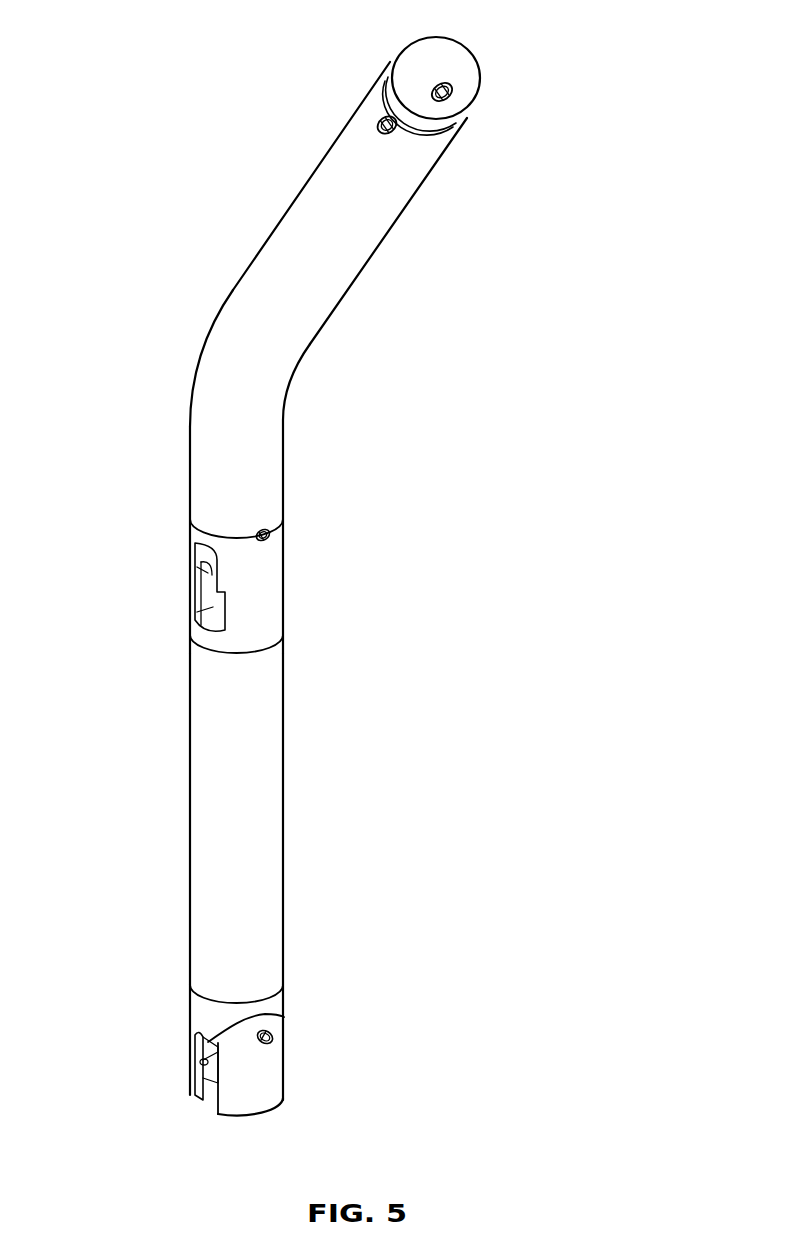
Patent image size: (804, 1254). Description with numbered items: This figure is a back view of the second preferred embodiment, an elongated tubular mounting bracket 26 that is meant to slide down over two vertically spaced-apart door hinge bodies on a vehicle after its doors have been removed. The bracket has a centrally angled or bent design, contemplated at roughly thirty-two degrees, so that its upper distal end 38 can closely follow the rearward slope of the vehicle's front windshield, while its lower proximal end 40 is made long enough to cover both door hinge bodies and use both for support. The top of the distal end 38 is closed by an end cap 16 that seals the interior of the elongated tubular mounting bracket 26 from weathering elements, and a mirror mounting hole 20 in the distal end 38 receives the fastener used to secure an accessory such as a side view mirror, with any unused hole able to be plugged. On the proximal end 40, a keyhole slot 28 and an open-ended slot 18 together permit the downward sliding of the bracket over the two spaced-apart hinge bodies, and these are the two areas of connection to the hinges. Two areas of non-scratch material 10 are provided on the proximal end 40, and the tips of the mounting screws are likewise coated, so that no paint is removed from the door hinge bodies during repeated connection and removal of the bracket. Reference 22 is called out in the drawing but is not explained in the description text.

The non-scratch material 10 is at (283, 605).
The end cap 16 is at (463, 55).
The open-ended slot 18 is at (284, 1015).
The mirror mounting hole 20 is at (382, 117).
The slot 22 is at (191, 553).
The elongated tubular mounting bracket 26 is at (217, 313).
The keyhole slot 28 is at (213, 613).
The distal end 38 is at (318, 152).
The proximal end 40 is at (168, 910).